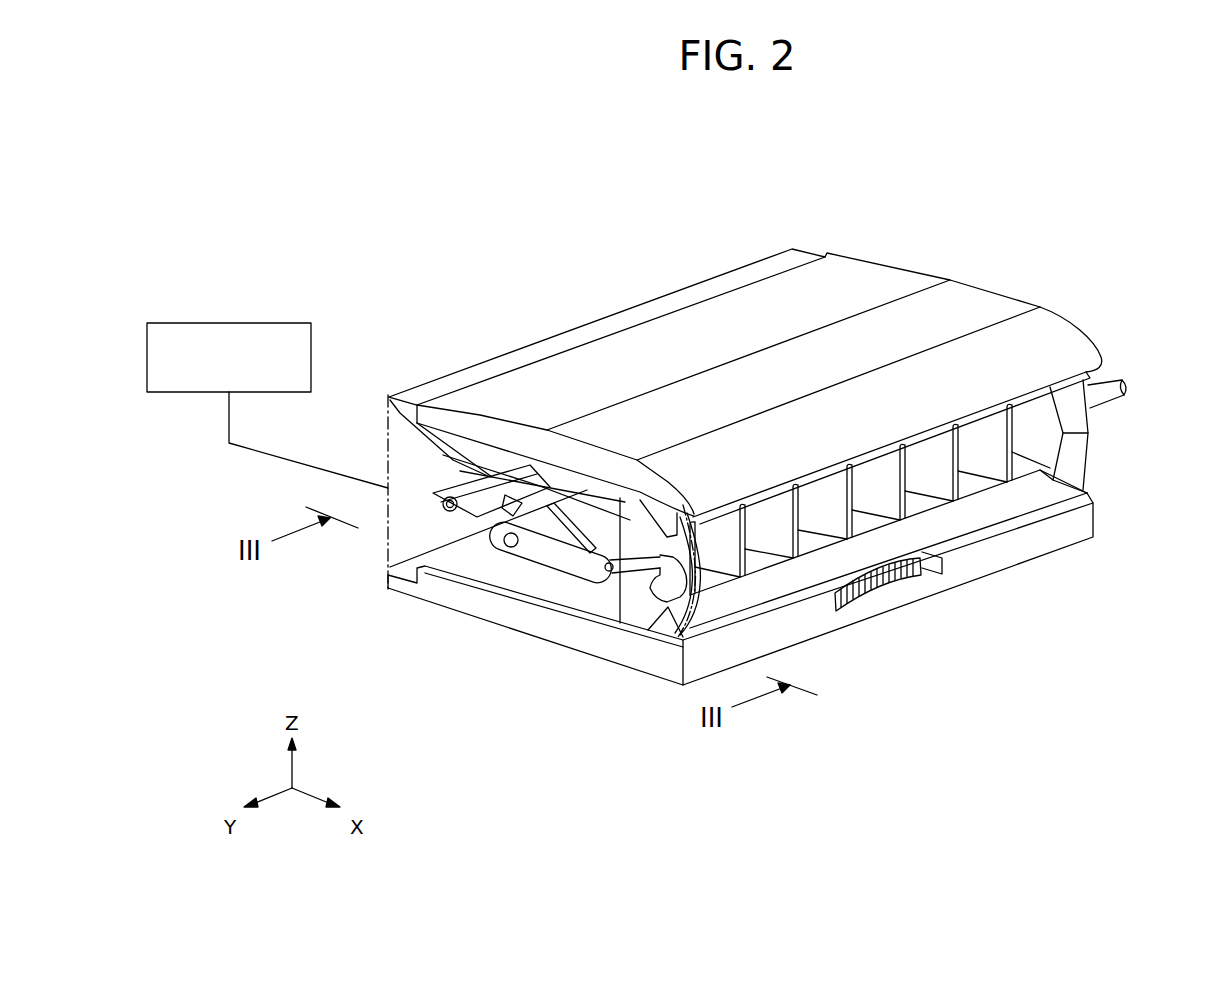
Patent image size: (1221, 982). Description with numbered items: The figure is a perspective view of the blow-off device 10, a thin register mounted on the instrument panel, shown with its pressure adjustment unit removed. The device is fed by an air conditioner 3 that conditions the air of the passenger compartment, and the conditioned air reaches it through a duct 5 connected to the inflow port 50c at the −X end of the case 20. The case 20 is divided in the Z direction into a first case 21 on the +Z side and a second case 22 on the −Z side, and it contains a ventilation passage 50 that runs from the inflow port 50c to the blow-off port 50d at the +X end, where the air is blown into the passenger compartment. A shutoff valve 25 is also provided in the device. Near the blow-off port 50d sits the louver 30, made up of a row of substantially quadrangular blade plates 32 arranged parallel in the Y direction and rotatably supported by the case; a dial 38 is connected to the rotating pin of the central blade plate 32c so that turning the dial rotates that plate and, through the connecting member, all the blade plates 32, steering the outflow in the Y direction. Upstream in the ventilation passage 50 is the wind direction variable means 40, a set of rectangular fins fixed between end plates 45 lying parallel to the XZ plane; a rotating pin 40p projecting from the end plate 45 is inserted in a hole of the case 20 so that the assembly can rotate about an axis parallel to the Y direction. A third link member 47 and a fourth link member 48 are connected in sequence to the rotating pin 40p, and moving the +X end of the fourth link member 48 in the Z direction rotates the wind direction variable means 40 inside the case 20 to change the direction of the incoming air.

The air conditioner 3 is at (268, 322).
The duct 5 is at (272, 460).
The blow-off device 10 is at (950, 208).
The case 20 is at (726, 400).
The first case 21 is at (713, 310).
The second case 22 is at (597, 660).
The shutoff valve 25 is at (443, 490).
The louver 30 is at (888, 561).
The blade plates 32 is at (879, 561).
The central blade plate 32c is at (828, 527).
The dial 38 is at (910, 592).
The wind direction variable means 40 is at (531, 515).
The rotating pin 40p is at (505, 546).
The end plate 45 is at (503, 522).
The third link member 47 is at (585, 560).
The fourth link member 48 is at (653, 580).
The ventilation passage 50 is at (731, 574).
The inflow port 50c is at (365, 452).
The blow-off port 50d is at (1045, 452).